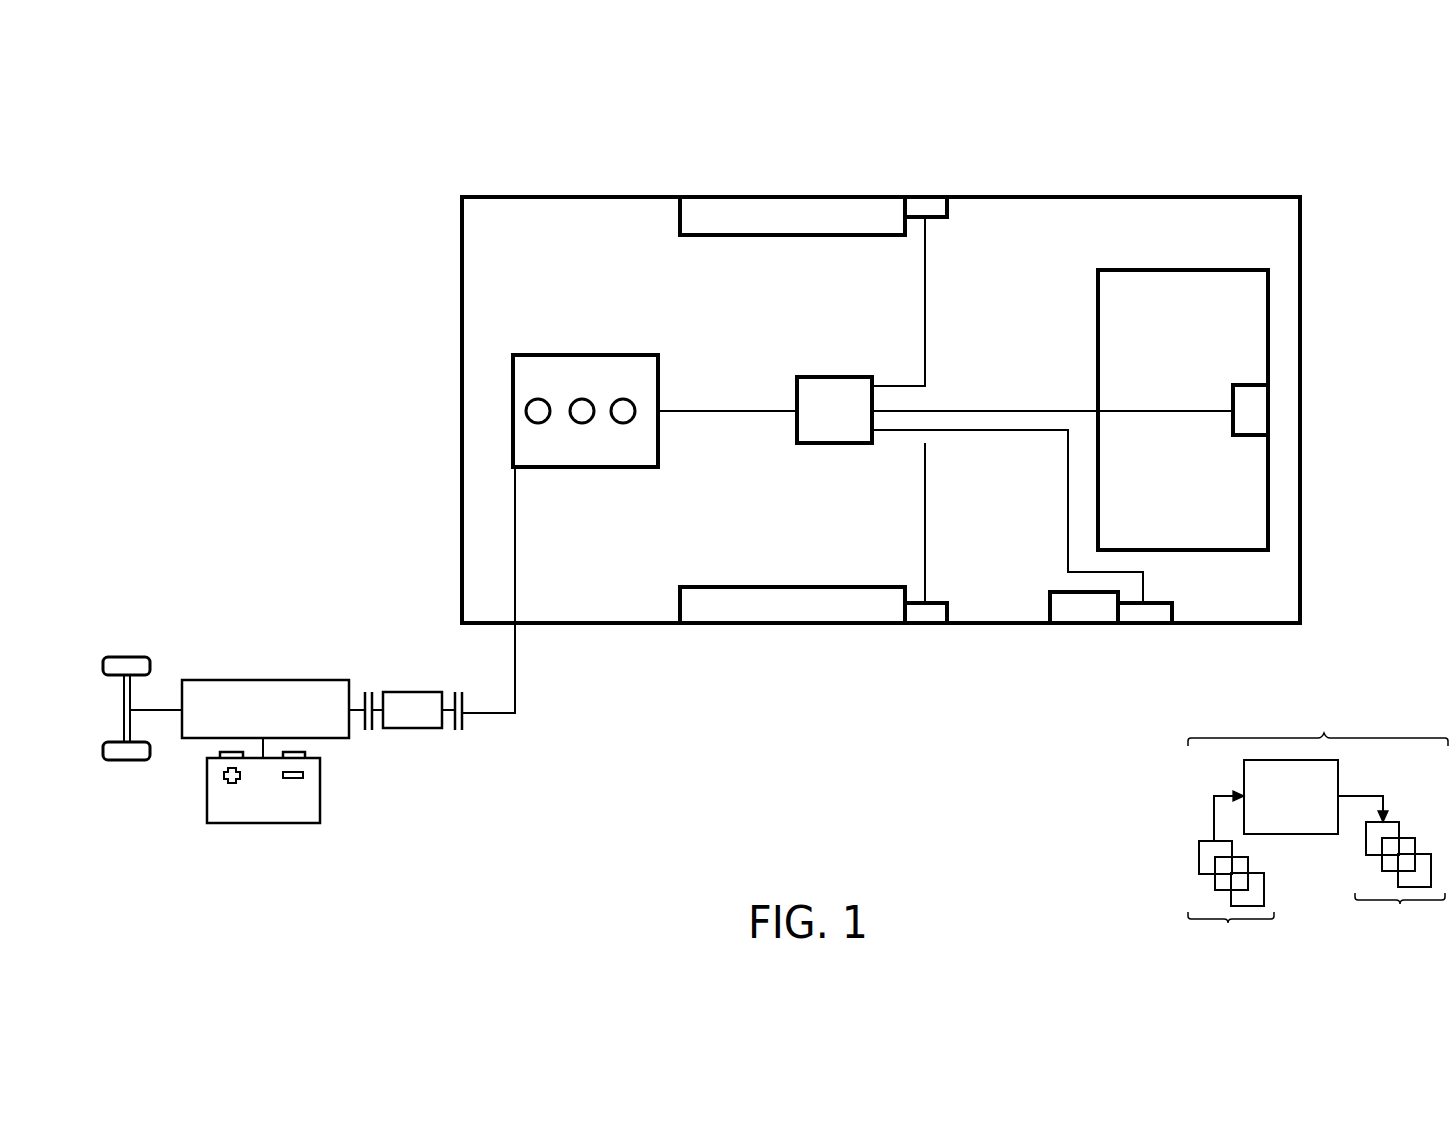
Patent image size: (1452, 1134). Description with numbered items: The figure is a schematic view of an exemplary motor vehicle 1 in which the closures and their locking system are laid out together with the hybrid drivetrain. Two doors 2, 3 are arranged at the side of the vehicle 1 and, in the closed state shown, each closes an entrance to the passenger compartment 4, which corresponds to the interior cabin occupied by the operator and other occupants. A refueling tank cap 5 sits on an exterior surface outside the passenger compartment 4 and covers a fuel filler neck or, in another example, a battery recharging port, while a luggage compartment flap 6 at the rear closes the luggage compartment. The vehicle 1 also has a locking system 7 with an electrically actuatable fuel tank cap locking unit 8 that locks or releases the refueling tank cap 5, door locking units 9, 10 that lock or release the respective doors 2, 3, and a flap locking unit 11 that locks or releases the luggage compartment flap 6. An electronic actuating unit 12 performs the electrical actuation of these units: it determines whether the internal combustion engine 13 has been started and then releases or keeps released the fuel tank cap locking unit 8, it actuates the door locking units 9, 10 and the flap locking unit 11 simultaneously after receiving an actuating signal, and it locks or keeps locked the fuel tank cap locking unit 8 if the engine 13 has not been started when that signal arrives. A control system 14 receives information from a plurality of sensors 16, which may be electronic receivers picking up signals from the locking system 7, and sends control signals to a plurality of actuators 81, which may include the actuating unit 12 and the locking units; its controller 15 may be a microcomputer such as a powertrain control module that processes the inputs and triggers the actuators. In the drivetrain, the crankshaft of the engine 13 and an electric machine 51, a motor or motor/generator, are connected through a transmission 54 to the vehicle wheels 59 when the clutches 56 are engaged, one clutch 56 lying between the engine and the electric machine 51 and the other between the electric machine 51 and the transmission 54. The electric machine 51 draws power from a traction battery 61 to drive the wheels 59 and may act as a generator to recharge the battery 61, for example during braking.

The vehicle 1 is at (1022, 188).
The door 2 is at (733, 608).
The door 3 is at (745, 207).
The passenger compartment 4 is at (768, 348).
The refueling tank cap 5 is at (1082, 610).
The luggage compartment flap 6 is at (1235, 335).
The locking system 7 is at (858, 368).
The fuel tank cap locking unit 8 is at (1147, 610).
The door locking unit 9 is at (918, 618).
The door locking unit 10 is at (925, 210).
The flap locking unit 11 is at (1252, 405).
The electronic actuating unit 12 is at (835, 445).
The internal combustion engine 13 is at (570, 443).
The control system 14 is at (1318, 828).
The controller 15 is at (1291, 797).
The sensors 16 is at (1231, 882).
The actuators 81 is at (1391, 875).
The electric machine 51 is at (413, 729).
The transmission 54 is at (208, 738).
The clutch 56 is at (373, 702).
The vehicle wheels 59 is at (123, 760).
The traction battery 61 is at (270, 825).